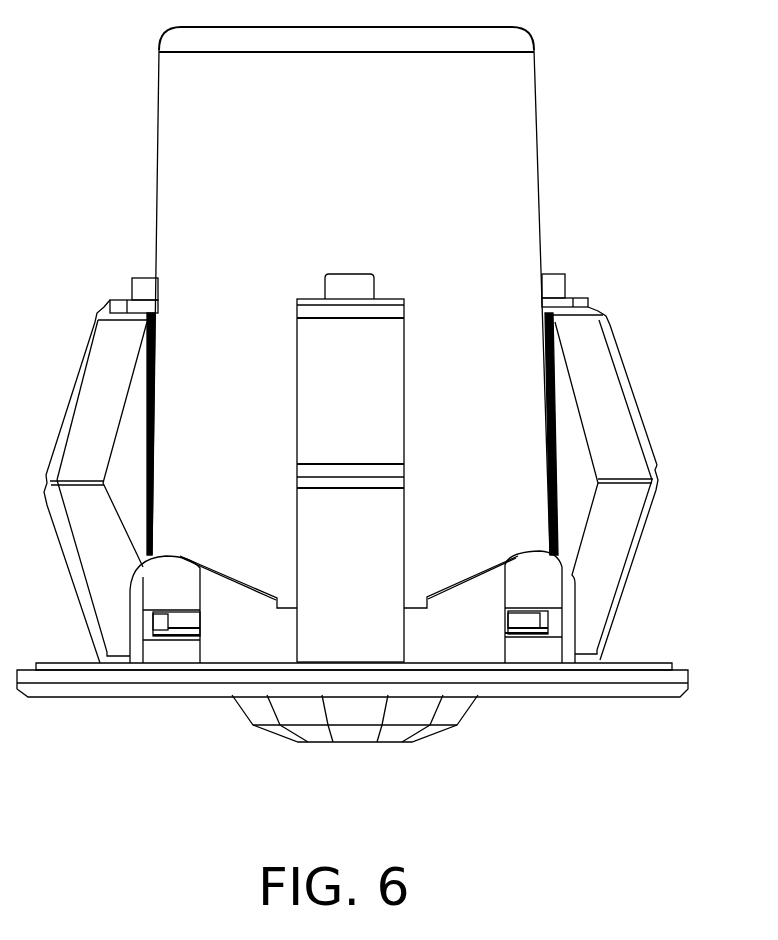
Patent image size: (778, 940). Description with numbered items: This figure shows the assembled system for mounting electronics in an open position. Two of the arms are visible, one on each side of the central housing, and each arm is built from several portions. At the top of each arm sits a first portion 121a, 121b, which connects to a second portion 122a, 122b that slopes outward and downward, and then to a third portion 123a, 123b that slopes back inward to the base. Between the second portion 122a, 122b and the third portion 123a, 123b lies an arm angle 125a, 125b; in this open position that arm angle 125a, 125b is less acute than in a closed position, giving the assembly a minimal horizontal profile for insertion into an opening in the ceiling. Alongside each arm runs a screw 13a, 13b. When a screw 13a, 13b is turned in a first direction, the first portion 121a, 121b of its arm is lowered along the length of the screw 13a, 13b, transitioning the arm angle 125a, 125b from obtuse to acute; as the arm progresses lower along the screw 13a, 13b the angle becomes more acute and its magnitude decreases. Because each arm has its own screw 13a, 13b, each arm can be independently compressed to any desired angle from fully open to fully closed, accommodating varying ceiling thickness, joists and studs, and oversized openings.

The first portion 121a is at (580, 297).
The first portion 121b is at (122, 299).
The second portion 122a is at (617, 372).
The second portion 122b is at (78, 422).
The third portion 123a is at (628, 528).
The third portion 123b is at (87, 572).
The arm angle 125a is at (585, 493).
The arm angle 125b is at (137, 490).
The screw 13a is at (557, 420).
The screw 13b is at (145, 405).